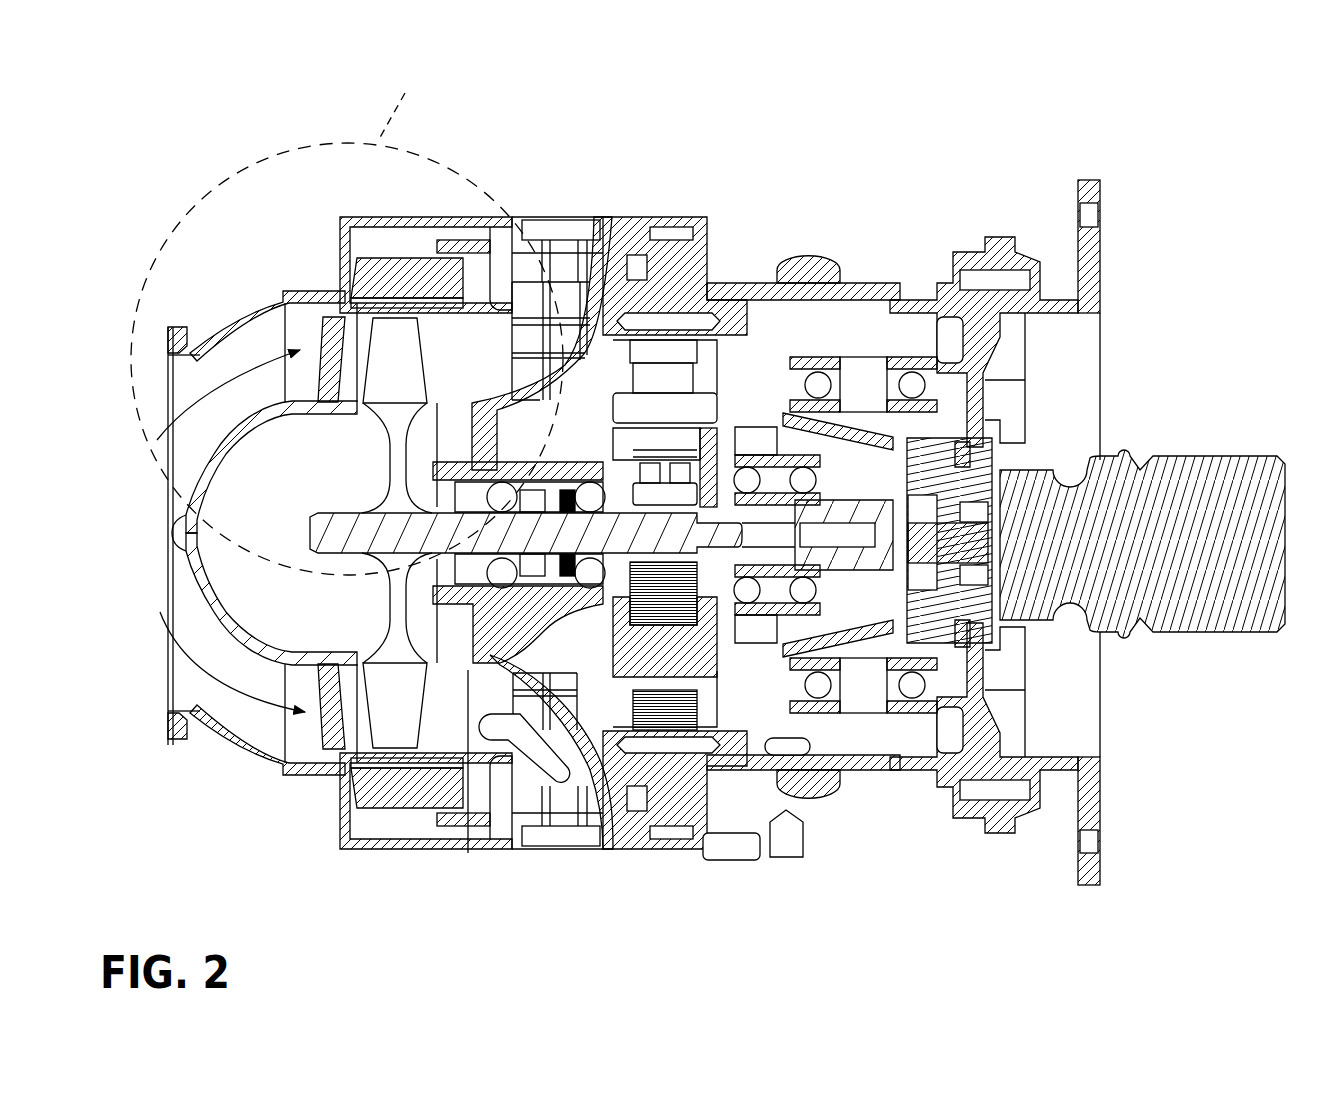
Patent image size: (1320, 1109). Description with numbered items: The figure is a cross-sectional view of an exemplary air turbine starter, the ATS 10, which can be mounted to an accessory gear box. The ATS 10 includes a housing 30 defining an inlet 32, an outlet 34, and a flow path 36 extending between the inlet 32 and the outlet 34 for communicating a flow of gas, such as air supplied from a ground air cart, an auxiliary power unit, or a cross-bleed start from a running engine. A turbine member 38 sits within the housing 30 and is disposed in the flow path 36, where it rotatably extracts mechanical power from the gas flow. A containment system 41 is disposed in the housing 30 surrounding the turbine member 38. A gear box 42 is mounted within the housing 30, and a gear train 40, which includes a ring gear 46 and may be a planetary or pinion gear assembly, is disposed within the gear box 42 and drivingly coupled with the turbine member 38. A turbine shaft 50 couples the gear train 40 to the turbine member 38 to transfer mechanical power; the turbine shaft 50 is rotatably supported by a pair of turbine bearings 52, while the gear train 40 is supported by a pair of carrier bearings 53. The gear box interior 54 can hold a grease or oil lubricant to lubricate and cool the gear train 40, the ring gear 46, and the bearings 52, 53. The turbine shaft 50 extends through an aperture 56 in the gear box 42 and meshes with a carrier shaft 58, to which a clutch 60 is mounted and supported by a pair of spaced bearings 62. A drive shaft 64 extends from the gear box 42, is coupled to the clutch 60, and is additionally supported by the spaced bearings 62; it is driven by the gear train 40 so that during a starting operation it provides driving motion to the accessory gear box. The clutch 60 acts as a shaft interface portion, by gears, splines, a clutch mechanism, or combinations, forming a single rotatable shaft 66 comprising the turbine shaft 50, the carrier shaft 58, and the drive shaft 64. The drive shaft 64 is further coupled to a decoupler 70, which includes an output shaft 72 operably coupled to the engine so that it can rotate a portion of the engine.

The air turbine starter 10 is at (1037, 128).
The housing 30 is at (383, 216).
The inlet 32 is at (150, 466).
The outlet 34 is at (576, 216).
The flow path 36 is at (233, 373).
The turbine member 38 is at (368, 360).
The gear train 40 is at (718, 358).
The containment system 41 is at (422, 256).
The gear box 42 is at (737, 378).
The ring gear 46 is at (668, 704).
The turbine shaft 50 is at (433, 540).
The turbine bearings 52 is at (505, 582).
The carrier bearings 53 is at (803, 604).
The gear box interior 54 is at (587, 590).
The aperture 56 is at (754, 533).
The carrier shaft 58 is at (863, 505).
The clutch 60 is at (916, 699).
The spaced bearings 62 is at (822, 699).
The drive shaft 64 is at (942, 423).
The single rotatable shaft 66 is at (933, 467).
The decoupler 70 is at (1065, 458).
The output shaft 72 is at (1231, 455).